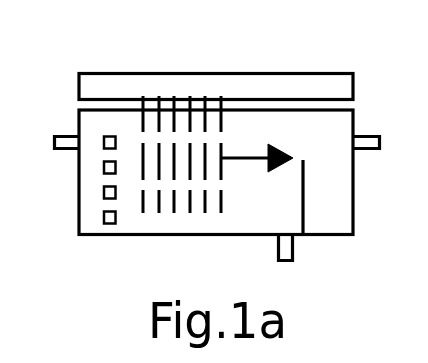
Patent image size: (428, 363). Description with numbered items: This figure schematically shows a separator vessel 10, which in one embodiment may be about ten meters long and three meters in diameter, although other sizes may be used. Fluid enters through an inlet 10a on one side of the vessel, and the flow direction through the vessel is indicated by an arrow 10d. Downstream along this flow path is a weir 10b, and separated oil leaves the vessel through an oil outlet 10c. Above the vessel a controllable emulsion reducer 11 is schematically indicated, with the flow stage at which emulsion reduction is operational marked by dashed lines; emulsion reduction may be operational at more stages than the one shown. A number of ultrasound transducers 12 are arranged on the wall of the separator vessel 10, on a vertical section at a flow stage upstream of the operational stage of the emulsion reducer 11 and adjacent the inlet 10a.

The separator vessel 10 is at (141, 237).
The inlet 10a is at (60, 135).
The weir 10b is at (306, 212).
The oil outlet 10c is at (362, 135).
The arrow 10d is at (280, 168).
The controllable emulsion reducer 11 is at (111, 71).
The ultrasound transducers 12 is at (102, 216).